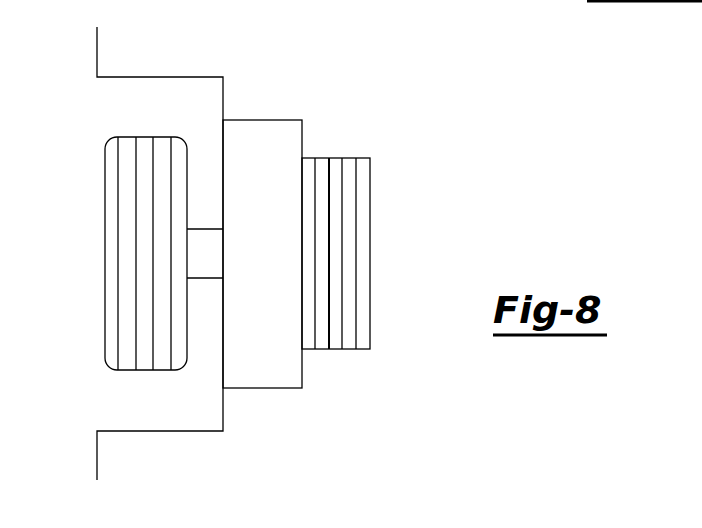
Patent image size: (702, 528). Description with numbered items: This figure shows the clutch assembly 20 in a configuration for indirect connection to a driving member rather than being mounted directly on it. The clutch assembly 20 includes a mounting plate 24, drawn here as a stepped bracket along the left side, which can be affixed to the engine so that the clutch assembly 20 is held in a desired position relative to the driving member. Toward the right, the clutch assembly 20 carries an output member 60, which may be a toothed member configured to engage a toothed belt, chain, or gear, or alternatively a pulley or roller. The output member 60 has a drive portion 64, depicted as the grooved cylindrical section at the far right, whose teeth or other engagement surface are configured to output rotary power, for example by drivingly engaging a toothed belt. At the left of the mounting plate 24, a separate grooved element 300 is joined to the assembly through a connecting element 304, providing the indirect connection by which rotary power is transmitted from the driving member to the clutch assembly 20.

The clutch assembly 20 is at (330, 63).
The mounting plate 24 is at (150, 77).
The output member 60 is at (320, 441).
The drive portion 64 is at (335, 158).
The fan wheel 300 is at (105, 322).
The shaft 304 is at (202, 268).